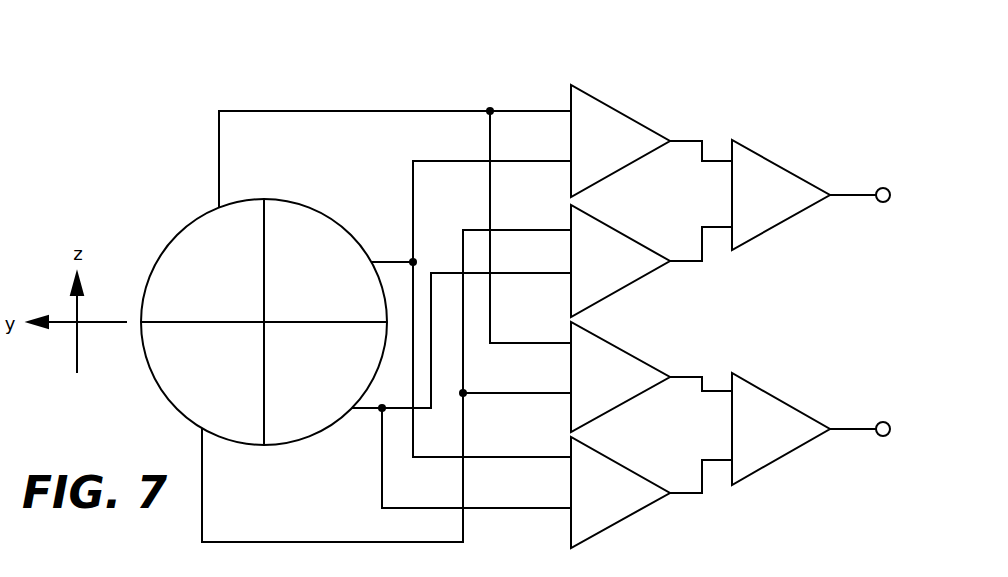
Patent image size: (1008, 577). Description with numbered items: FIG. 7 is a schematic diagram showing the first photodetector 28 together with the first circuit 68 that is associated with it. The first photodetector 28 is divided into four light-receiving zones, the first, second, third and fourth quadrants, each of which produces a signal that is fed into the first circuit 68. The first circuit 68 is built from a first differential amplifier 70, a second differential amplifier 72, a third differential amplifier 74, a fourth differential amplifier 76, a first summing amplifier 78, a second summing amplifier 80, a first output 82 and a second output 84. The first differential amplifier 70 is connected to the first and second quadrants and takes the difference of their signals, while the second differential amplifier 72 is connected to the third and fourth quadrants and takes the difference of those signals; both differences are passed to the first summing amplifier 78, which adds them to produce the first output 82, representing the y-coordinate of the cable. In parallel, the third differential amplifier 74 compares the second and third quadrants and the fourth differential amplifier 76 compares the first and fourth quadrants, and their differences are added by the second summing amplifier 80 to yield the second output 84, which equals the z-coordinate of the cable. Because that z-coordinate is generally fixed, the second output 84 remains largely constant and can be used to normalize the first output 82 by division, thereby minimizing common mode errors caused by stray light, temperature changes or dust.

The first photodetector 28 is at (167, 245).
The first circuit 68 is at (532, 53).
The first differential amplifier 70 is at (627, 105).
The second differential amplifier 72 is at (627, 233).
The third differential amplifier 74 is at (627, 347).
The fourth differential amplifier 76 is at (627, 463).
The first summing amplifier 78 is at (762, 152).
The second summing amplifier 80 is at (762, 385).
The first output 82 is at (889, 189).
The second output 84 is at (889, 423).